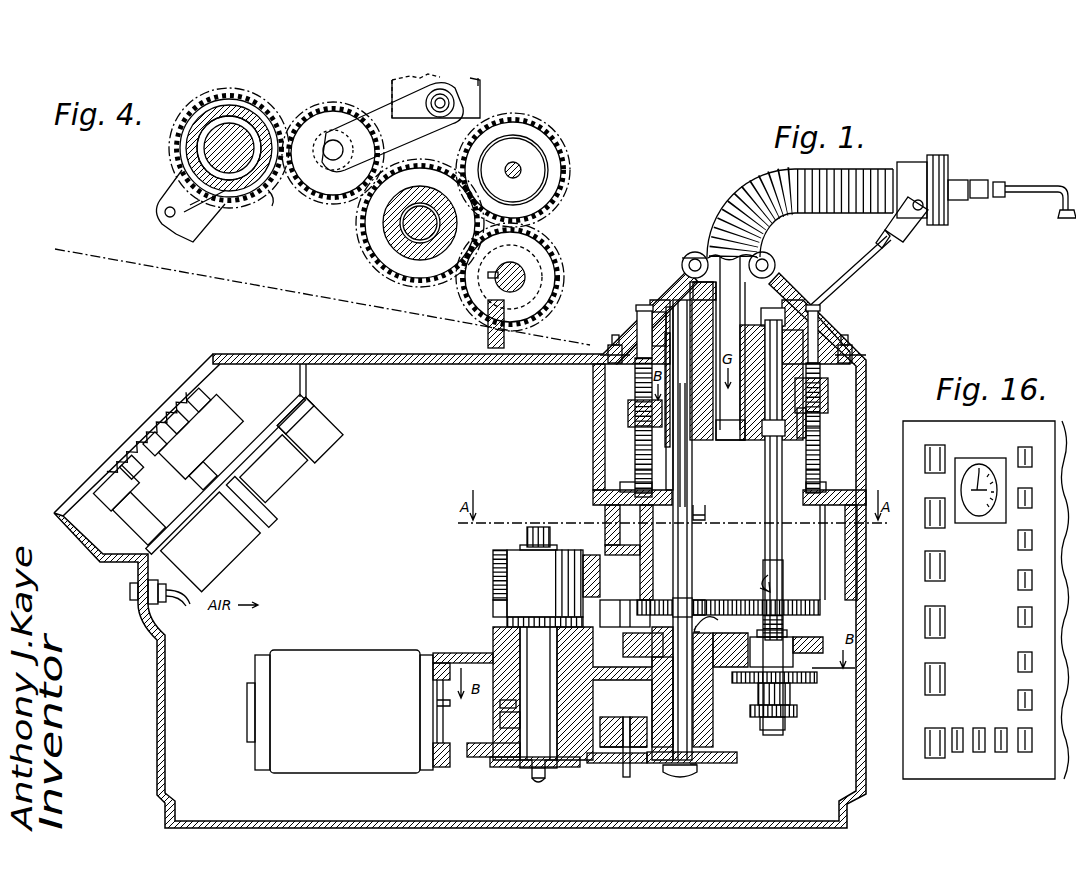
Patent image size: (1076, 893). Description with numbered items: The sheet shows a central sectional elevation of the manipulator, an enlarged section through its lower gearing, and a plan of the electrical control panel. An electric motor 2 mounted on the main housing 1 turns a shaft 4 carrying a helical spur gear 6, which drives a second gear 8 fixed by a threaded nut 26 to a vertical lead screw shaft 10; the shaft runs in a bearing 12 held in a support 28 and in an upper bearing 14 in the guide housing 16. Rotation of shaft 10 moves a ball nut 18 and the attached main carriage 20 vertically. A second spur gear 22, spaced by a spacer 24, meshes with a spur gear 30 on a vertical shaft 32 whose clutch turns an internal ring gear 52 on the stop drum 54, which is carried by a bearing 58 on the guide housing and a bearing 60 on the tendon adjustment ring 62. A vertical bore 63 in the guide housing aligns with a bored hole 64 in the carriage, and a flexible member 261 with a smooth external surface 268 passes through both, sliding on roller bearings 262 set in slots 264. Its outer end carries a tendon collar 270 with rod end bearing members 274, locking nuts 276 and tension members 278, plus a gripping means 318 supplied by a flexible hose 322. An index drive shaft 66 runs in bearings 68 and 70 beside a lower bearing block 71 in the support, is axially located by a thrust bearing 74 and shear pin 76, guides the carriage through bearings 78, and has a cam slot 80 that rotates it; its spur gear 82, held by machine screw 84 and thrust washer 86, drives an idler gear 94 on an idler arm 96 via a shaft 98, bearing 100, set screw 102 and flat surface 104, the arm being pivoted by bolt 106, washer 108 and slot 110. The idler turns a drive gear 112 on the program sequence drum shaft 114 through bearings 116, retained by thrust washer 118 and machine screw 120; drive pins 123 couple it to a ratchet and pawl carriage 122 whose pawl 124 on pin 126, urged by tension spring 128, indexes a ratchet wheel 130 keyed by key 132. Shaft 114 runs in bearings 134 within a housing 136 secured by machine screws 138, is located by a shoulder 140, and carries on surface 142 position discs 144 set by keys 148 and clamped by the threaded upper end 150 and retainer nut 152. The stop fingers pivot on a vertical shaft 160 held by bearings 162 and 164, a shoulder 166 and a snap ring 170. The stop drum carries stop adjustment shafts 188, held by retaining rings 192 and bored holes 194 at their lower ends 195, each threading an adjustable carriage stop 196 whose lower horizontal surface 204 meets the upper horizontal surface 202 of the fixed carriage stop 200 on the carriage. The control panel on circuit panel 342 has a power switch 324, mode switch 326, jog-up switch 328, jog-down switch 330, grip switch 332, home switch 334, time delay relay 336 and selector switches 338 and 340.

In FIG. 4, the main housing 1 is at (478, 82).
In FIG. 1, the main housing 1 is at (860, 386).
In FIG. 1, the electric motor 2 is at (350, 668).
In FIG. 1, the shaft 4 is at (292, 294).
In FIG. 4, the helical spur gear 6 is at (508, 343).
In FIG. 4, the second gear 8 is at (540, 298).
In FIG. 1, the second gear 8 is at (800, 710).
In FIG. 4, the lead screw shaft 10 is at (505, 280).
In FIG. 1, the lead screw shaft 10 is at (764, 590).
In FIG. 1, the bearing 12 is at (776, 648).
In FIG. 1, the bearing 14 is at (742, 312).
In FIG. 1, the guide housing 16 is at (684, 272).
In FIG. 1, the ball nut 18 is at (762, 420).
In FIG. 1, the main carriage 20 is at (708, 440).
In FIG. 4, the second spur gear 22 is at (548, 248).
In FIG. 1, the second spur gear 22 is at (818, 680).
In FIG. 1, the spacer 24 is at (776, 698).
In FIG. 1, the threaded nut 26 is at (773, 732).
In FIG. 1, the support 28 is at (741, 638).
In FIG. 4, the spur gear 30 is at (556, 195).
In FIG. 4, the vertical shaft 32 is at (520, 168).
In FIG. 1, the internal ring gear 52 is at (818, 606).
In FIG. 1, the stop drum 54 is at (818, 553).
In FIG. 1, the bearing 58 is at (780, 300).
In FIG. 1, the bearing 60 is at (615, 344).
In FIG. 1, the tendon adjustment ring 62 is at (604, 360).
In FIG. 1, the vertical bore 63 is at (745, 290).
In FIG. 1, the bored hole 64 is at (724, 440).
In FIG. 4, the index drive shaft 66 is at (420, 214).
In FIG. 1, the index drive shaft 66 is at (693, 548).
In FIG. 1, the bearing 68 is at (664, 346).
In FIG. 1, the bearing 70 is at (693, 670).
In FIG. 1, the bearing block 71 is at (713, 735).
In FIG. 1, the thrust bearing 74 is at (690, 612).
In FIG. 1, the shear pin 76 is at (712, 608).
In FIG. 1, the bearings 78 is at (667, 436).
In FIG. 1, the cam slot 80 is at (686, 482).
In FIG. 4, the spur gear 82 is at (366, 238).
In FIG. 1, the spur gear 82 is at (732, 762).
In FIG. 1, the machine screw 84 is at (676, 778).
In FIG. 1, the thrust washer 86 is at (696, 770).
In FIG. 4, the idler gear 94 is at (311, 196).
In FIG. 1, the idler gear 94 is at (598, 770).
In FIG. 4, the idler arm 96 is at (378, 118).
In FIG. 4, the shaft 98 is at (340, 151).
In FIG. 1, the bearing 100 is at (625, 770).
In FIG. 4, the set screw 102 is at (325, 112).
In FIG. 1, the set screw 102 is at (606, 718).
In FIG. 4, the flat surface 104 is at (320, 180).
In FIG. 1, the flat surface 104 is at (626, 728).
In FIG. 4, the bolt 106 is at (446, 103).
In FIG. 4, the washer 108 is at (442, 118).
In FIG. 4, the slot 110 is at (418, 118).
In FIG. 4, the drive gear 112 is at (276, 196).
In FIG. 1, the drive gear 112 is at (510, 765).
In FIG. 4, the program sequence drum shaft 114 is at (232, 182).
In FIG. 1, the program sequence drum shaft 114 is at (535, 745).
In FIG. 1, the radial and thrust bearings 116 is at (490, 756).
In FIG. 1, the thrust washer 118 is at (548, 770).
In FIG. 1, the machine screw 120 is at (540, 780).
In FIG. 4, the ratchet and pawl carriage 122 is at (186, 234).
In FIG. 1, the drive pins 123 is at (520, 768).
In FIG. 4, the pawl 124 is at (206, 234).
In FIG. 4, the pin 126 is at (165, 212).
In FIG. 4, the tension spring 128 is at (180, 190).
In FIG. 4, the ratchet wheel 130 is at (210, 106).
In FIG. 1, the ratchet wheel 130 is at (632, 724).
In FIG. 4, the key 132 is at (200, 152).
In FIG. 1, the bearings 134 is at (507, 627).
In FIG. 1, the housing 136 is at (502, 640).
In FIG. 1, the machine screws 138 is at (502, 702).
In FIG. 1, the shoulder 140 is at (503, 600).
In FIG. 1, the co-axial surface 142 is at (525, 567).
In FIG. 1, the position discs 144 is at (493, 585).
In FIG. 1, the keys 148 is at (566, 560).
In FIG. 1, the upper end 150 is at (538, 528).
In FIG. 1, the retainer nut 152 is at (522, 540).
In FIG. 1, the vertical shaft 160 is at (620, 538).
In FIG. 1, the bearing 162 is at (605, 492).
In FIG. 1, the bearing 164 is at (632, 640).
In FIG. 1, the shoulder 166 is at (600, 620).
In FIG. 1, the snap ring 170 is at (642, 548).
In FIG. 1, the stop adjustment shafts 188 is at (636, 452).
In FIG. 1, the retaining rings 192 is at (630, 364).
In FIG. 1, the bored holes 194 is at (636, 490).
In FIG. 1, the lower ends 195 is at (735, 475).
In FIG. 1, the adjustable carriage stop 196 is at (634, 414).
In FIG. 1, the fixed carriage stop 200 is at (822, 444).
In FIG. 1, the upper horizontal surface 202 is at (831, 427).
In FIG. 1, the lower horizontal surface 204 is at (831, 412).
In FIG. 1, the flexible member 261 is at (760, 190).
In FIG. 1, the roller bearings 262 is at (702, 252).
In FIG. 1, the slots 264 is at (688, 256).
In FIG. 1, the external surface 268 is at (745, 330).
In FIG. 1, the tendon collar 270 is at (905, 166).
In FIG. 1, the universal rod end bearing members 274 is at (907, 229).
In FIG. 1, the locking nuts 276 is at (896, 242).
In FIG. 1, the flexible tension members 278 is at (855, 262).
In FIG. 1, the gripping means 318 is at (982, 196).
In FIG. 1, the flexible hose 322 is at (176, 612).
In FIG. 16, the power-on, power-off switch 324 is at (938, 446).
In FIG. 16, the automatic or manual mode switch 326 is at (938, 499).
In FIG. 16, the motor jog-up switch 328 is at (938, 552).
In FIG. 16, the jog-down switch 330 is at (948, 620).
In FIG. 16, the grip-on, grip-off switch 332 is at (950, 660).
In FIG. 1, the home switch 334 is at (90, 470).
In FIG. 16, the home switch 334 is at (925, 730).
In FIG. 16, the time delay relay 336 is at (993, 458).
In FIG. 16, the selector switches 338 is at (1018, 616).
In FIG. 1, the selector switches 340 is at (136, 410).
In FIG. 16, the selector switches 340 is at (1022, 727).
In FIG. 1, the circuit panel 342 is at (278, 406).